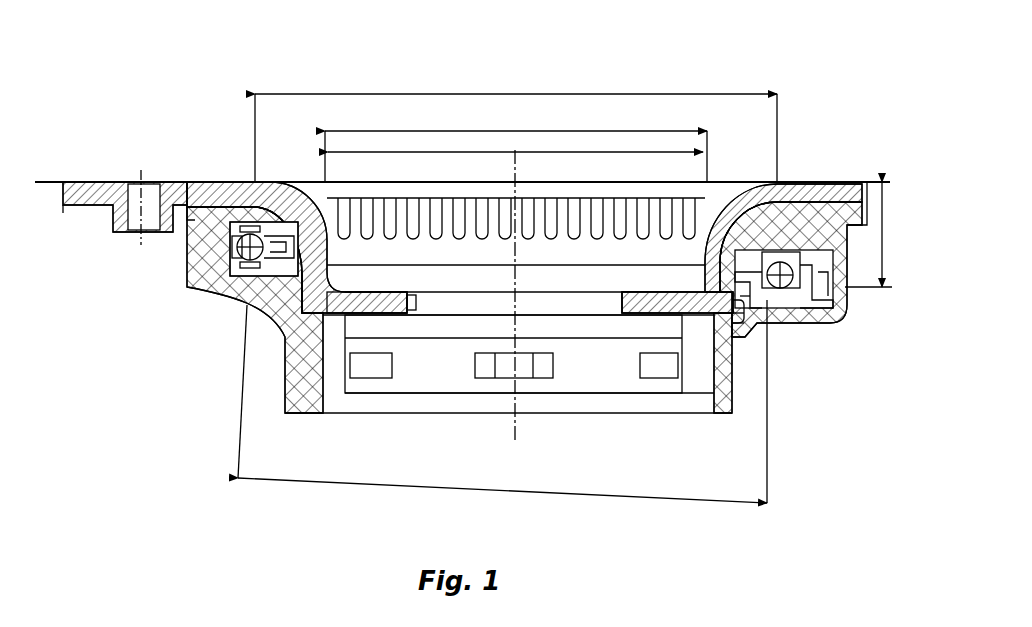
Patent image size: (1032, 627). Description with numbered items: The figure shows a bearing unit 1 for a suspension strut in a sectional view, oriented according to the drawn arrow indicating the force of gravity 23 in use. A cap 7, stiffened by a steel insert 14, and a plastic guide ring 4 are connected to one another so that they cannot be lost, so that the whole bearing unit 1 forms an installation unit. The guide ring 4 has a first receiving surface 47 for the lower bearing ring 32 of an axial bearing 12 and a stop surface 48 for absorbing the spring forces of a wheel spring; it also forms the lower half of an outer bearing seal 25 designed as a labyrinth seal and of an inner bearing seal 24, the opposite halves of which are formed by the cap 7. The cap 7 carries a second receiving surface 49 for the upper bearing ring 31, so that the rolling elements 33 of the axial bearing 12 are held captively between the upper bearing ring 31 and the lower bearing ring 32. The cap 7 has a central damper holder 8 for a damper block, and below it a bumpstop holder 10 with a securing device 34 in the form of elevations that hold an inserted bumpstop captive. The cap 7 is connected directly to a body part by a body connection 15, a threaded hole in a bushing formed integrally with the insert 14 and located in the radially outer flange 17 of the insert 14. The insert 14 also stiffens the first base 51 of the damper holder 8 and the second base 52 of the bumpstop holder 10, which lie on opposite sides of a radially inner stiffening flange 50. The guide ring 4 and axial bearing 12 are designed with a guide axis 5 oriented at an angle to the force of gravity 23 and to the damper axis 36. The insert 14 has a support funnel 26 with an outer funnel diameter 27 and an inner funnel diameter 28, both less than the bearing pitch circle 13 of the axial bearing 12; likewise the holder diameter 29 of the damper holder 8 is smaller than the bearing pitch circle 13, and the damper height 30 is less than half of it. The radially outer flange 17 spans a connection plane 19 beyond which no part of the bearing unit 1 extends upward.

The bearing unit 1 is at (860, 84).
The guide ring 4 is at (285, 355).
The guide axis 5 is at (510, 440).
The cap 7 is at (883, 240).
The damper holder 8 is at (375, 250).
The bumpstop holder 10 is at (590, 372).
The axial bearing 12 is at (171, 298).
The bearing pitch circle 13 is at (740, 508).
The insert 14 is at (218, 181).
The body connection 15 is at (138, 180).
The radially outer flange 17 is at (75, 180).
The connection plane 19 is at (62, 207).
The force of gravity 23 is at (82, 115).
The inner bearing seal 24 is at (738, 310).
The outer bearing seal 25 is at (812, 310).
The support funnel 26 is at (740, 192).
The outer funnel diameter 27 is at (255, 94).
The inner funnel diameter 28 is at (325, 131).
The holder diameter 29 is at (600, 152).
The damper height 30 is at (885, 181).
The upper bearing ring 31 is at (245, 235).
The lower bearing ring 32 is at (262, 292).
The rolling elements 33 is at (250, 261).
The securing device 34 is at (657, 380).
The damper axis 36 is at (510, 402).
The first receiving surface 47 is at (782, 310).
The stop surface 48 is at (763, 338).
The second receiving surface 49 is at (777, 243).
The radially inner stiffening flange 50 is at (395, 290).
The first base 51 is at (627, 283).
The second base 52 is at (375, 322).